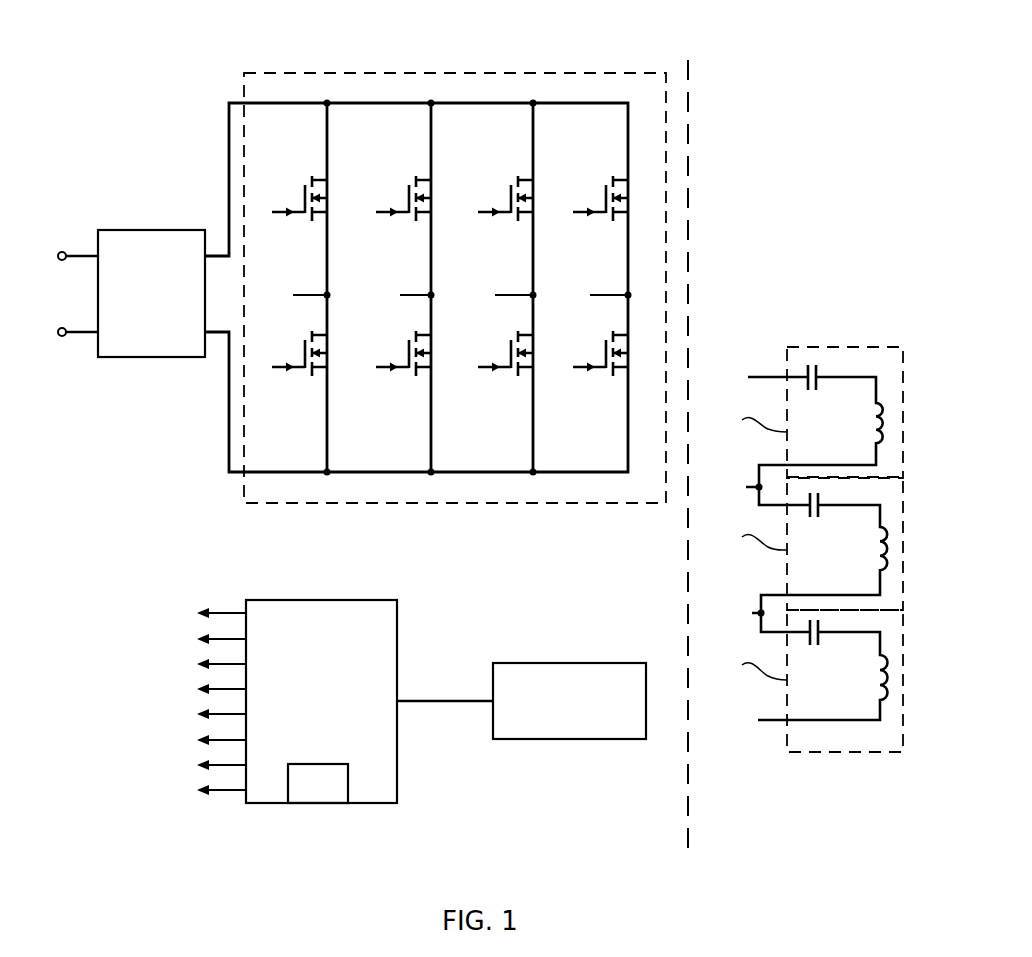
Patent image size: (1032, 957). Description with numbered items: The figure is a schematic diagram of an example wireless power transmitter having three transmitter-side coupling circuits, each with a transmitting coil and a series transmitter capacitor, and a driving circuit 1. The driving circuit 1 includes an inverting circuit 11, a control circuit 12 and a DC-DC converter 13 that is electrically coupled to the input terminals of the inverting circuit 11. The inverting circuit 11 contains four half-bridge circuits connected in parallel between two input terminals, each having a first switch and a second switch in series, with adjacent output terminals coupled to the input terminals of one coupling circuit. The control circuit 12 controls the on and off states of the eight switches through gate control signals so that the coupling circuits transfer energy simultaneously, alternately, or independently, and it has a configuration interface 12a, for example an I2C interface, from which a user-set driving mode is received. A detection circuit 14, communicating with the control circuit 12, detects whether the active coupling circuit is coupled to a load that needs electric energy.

The driving circuit 1 is at (473, 455).
The inverting circuit 11 is at (245, 495).
The control circuit 12 is at (343, 600).
The configuration interface 12a is at (318, 783).
The DC-DC converter 13 is at (137, 357).
The detection circuit 14 is at (584, 663).